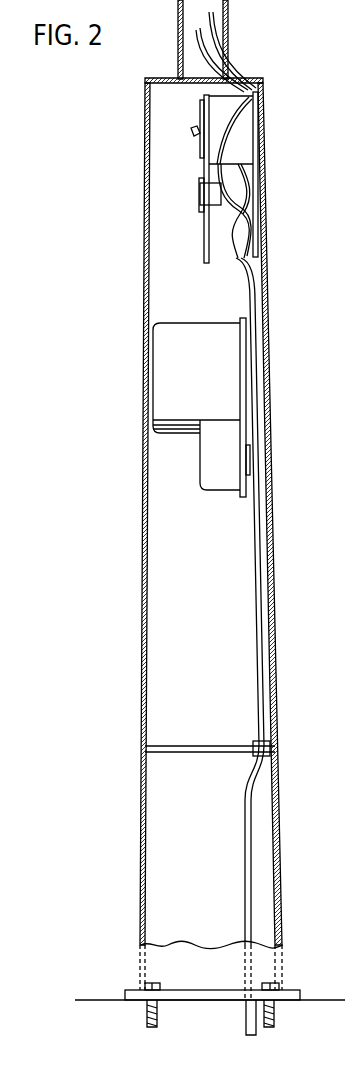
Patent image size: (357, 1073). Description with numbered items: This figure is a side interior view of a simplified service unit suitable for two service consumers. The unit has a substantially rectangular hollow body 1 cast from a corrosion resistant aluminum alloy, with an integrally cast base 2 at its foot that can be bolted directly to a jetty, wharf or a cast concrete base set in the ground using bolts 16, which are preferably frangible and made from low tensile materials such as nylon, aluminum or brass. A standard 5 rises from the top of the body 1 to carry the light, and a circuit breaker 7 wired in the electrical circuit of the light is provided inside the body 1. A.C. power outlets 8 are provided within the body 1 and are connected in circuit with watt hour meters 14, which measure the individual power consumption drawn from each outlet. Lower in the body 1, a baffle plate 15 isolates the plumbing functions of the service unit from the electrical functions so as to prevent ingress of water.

The hollow body 1 is at (144, 282).
The base 2 is at (289, 991).
The standard 5 is at (232, 36).
The circuit breaker 7 is at (191, 130).
The A.C. power outlets 8 is at (199, 196).
The watt hour meters 14 is at (170, 375).
The baffle plate 15 is at (203, 748).
The bolts 16 is at (146, 1019).